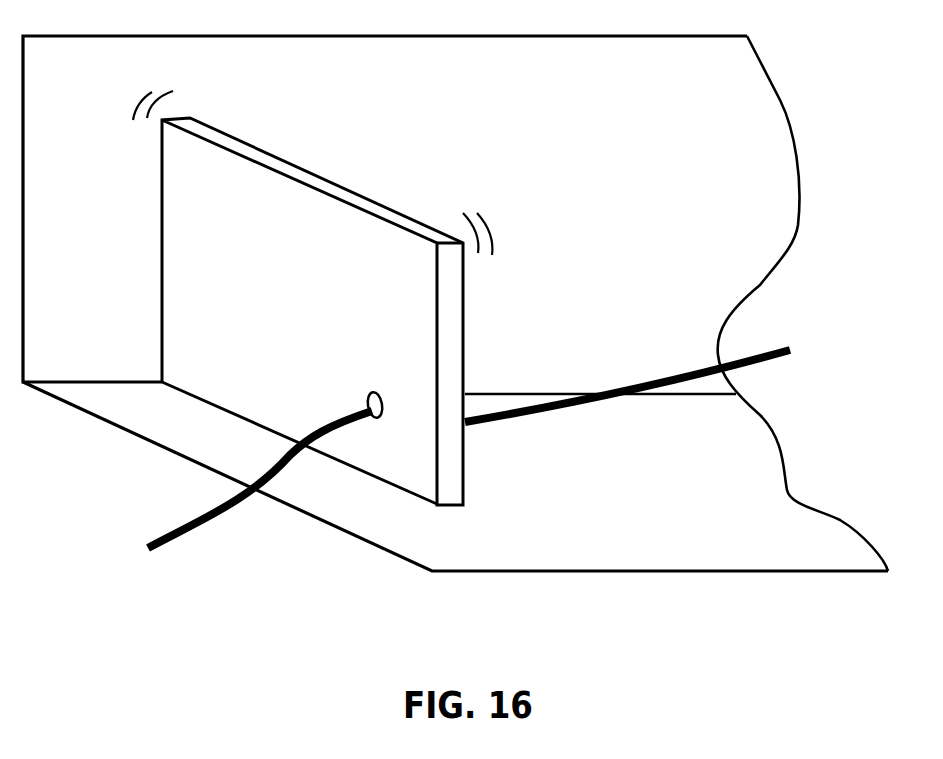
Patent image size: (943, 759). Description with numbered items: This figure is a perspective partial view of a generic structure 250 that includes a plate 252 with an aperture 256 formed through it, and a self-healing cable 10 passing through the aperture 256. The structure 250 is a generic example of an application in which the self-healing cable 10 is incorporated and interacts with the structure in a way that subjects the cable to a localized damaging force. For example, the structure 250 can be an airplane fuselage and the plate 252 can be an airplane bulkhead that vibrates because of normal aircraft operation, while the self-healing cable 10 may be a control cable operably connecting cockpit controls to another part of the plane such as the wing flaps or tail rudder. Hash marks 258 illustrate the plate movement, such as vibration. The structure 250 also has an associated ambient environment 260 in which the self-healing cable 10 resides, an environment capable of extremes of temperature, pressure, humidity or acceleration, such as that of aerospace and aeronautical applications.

The self-healing cable 10 is at (187, 521).
The structure 250 is at (778, 100).
The plate 252 is at (313, 173).
The aperture 256 is at (370, 397).
The hash marks 258 is at (188, 94).
The ambient environment 260 is at (710, 191).